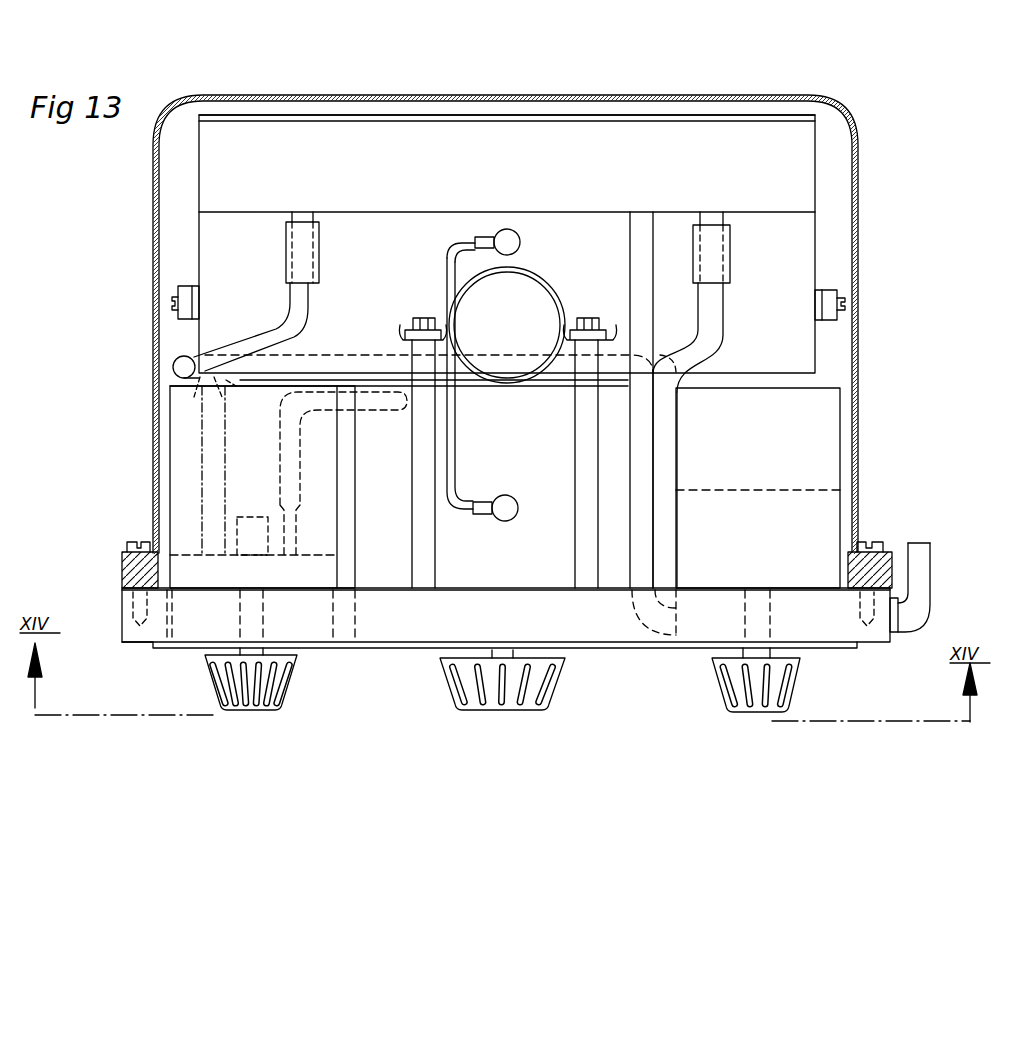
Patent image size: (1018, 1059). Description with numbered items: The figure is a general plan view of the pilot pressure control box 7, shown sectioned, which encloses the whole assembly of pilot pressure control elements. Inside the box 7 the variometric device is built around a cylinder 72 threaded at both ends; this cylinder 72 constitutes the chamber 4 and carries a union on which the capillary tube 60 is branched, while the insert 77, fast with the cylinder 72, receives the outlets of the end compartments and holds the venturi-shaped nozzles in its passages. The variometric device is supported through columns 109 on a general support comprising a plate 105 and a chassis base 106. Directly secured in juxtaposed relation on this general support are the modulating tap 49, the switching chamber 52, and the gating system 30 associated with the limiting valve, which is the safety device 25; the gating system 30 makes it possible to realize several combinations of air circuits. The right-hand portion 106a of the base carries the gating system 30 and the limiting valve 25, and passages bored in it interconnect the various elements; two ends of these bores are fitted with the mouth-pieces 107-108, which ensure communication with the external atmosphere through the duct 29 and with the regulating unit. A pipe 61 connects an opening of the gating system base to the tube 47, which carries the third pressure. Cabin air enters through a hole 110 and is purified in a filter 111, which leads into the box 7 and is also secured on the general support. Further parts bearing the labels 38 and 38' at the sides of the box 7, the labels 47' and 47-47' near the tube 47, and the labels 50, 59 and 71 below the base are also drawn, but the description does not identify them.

The box 7 is at (858, 225).
The insert 77 is at (388, 135).
The cylinder 72 is at (565, 232).
The chamber 4 is at (365, 270).
The left latch 38' is at (158, 303).
The right latch 38 is at (857, 311).
The left conduit with cylinder 47' is at (256, 291).
The tube 47 is at (466, 314).
The capillary tube 60 is at (540, 287).
The columns 109 is at (425, 540).
The duct 29 is at (640, 283).
The pipe 61 is at (668, 427).
The filter 111 is at (185, 478).
The hidden conduit 47-47' is at (160, 470).
The switching chamber 52 is at (375, 482).
The modulating tap 49 is at (195, 568).
The safety device 25 is at (815, 445).
The gating system 30 is at (800, 532).
The chassis base 106 is at (133, 612).
The right-hand portion of the base 106a is at (815, 628).
The plate 105 is at (182, 648).
The hole 110 is at (280, 648).
The left foot 50 is at (275, 675).
The center foot 59 is at (548, 690).
The right foot 71 is at (725, 680).
The mouth-pieces 107-108 is at (917, 600).